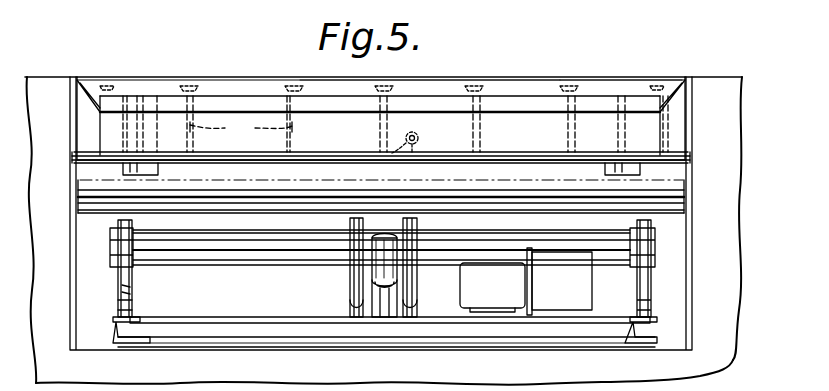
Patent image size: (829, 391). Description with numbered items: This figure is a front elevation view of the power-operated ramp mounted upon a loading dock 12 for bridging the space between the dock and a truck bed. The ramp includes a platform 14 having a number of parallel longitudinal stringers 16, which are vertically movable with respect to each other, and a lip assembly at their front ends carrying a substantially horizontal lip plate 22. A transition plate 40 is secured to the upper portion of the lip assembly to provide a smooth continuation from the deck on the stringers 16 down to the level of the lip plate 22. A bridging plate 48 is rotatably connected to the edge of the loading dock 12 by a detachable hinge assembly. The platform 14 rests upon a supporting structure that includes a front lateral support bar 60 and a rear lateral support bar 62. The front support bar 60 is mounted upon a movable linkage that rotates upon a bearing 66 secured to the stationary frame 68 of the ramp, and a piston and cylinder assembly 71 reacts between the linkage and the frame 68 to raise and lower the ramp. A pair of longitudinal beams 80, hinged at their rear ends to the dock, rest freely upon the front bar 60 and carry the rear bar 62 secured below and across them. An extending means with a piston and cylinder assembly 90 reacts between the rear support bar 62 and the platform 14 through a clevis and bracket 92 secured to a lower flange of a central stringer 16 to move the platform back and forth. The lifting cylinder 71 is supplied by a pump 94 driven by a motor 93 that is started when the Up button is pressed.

The loading dock 12 is at (712, 85).
The platform 14 is at (233, 75).
The longitudinal stringers 16 is at (241, 129).
The lip plate 22 is at (157, 104).
The transition plate 40 is at (438, 86).
The bridging plate 48 is at (609, 78).
The front lateral support bar 60 is at (237, 186).
The rear lateral support bar 62 is at (198, 250).
The bearing 66 is at (412, 224).
The stationary frame 68 is at (117, 287).
The piston and cylinder assembly 71 is at (384, 270).
The longitudinal beams 80 is at (622, 135).
The piston and cylinder assembly 90 is at (420, 139).
The clevis and bracket 92 is at (414, 133).
The motor 93 is at (475, 288).
The pump 94 is at (573, 272).